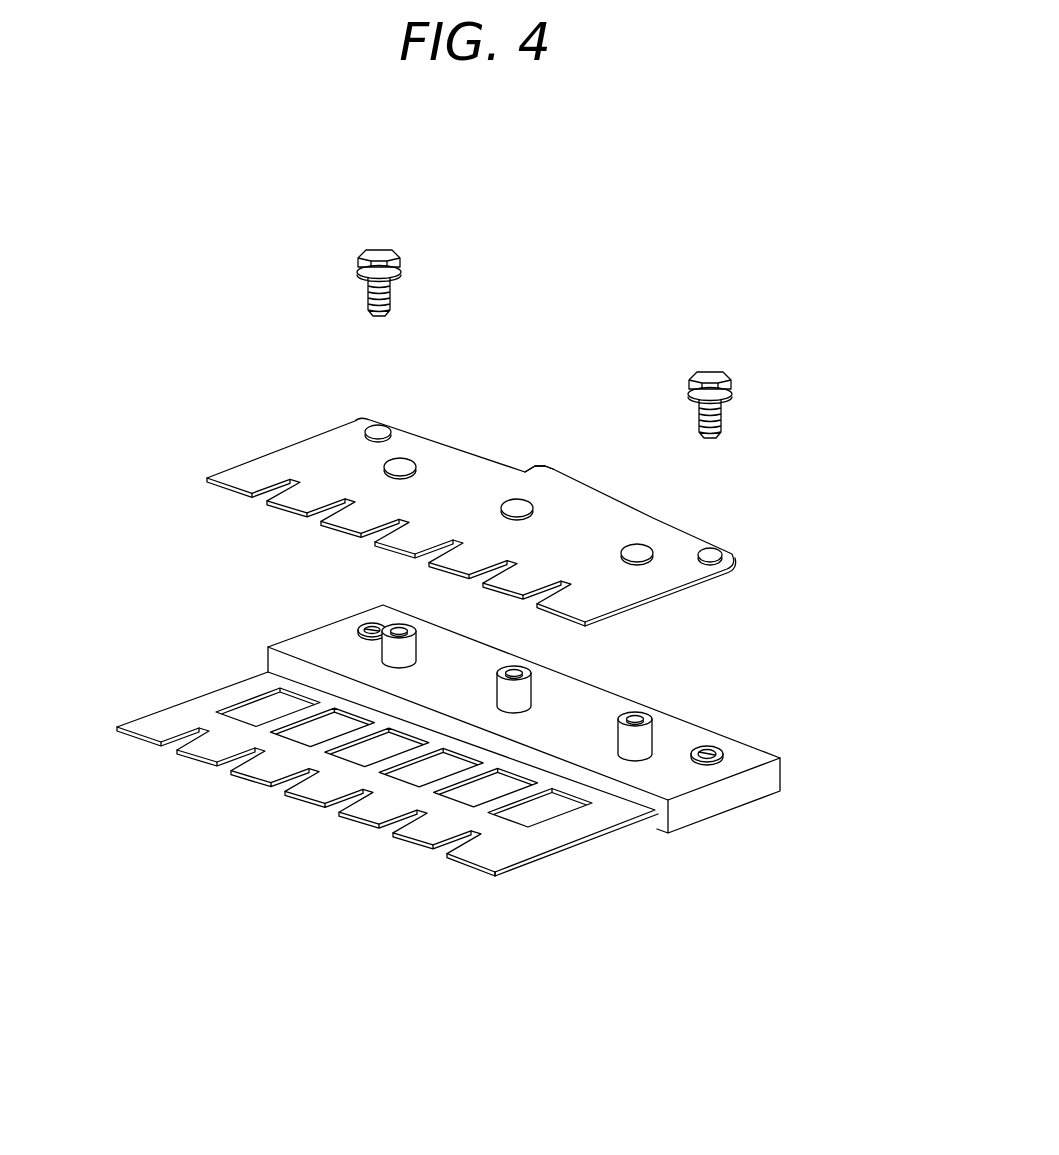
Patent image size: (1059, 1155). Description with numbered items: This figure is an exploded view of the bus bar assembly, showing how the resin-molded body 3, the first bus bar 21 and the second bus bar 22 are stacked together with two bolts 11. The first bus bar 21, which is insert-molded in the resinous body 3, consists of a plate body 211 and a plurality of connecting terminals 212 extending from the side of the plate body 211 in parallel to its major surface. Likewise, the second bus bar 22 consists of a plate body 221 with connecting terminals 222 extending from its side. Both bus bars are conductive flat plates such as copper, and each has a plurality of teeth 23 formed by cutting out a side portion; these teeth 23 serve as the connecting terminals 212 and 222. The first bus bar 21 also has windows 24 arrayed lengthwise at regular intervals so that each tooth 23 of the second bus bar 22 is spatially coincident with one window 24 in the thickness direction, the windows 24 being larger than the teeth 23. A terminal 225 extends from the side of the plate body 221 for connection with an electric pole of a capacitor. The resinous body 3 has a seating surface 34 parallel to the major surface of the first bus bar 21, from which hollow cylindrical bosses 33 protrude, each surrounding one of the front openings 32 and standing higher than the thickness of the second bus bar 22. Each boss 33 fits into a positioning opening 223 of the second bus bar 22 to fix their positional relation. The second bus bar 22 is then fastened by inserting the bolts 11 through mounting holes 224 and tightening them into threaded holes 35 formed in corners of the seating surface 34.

The resin-molded body 3 is at (546, 763).
The bolt 11 is at (381, 257).
The first bus bar 21 is at (500, 835).
The plate body 211 is at (622, 808).
The connecting terminals 212 is at (210, 752).
The second bus bar 22 is at (477, 429).
The plate body 221 is at (445, 462).
The connecting terminals 222 is at (278, 484).
The positioning openings 223 is at (518, 505).
The mounting holes 224 is at (378, 428).
The terminal 225 is at (590, 488).
The teeth 23 is at (377, 533).
The windows 24 is at (320, 734).
The front openings 32 is at (640, 717).
The bosses 33 is at (496, 685).
The seating surface 34 is at (593, 703).
The threaded holes 35 is at (372, 628).